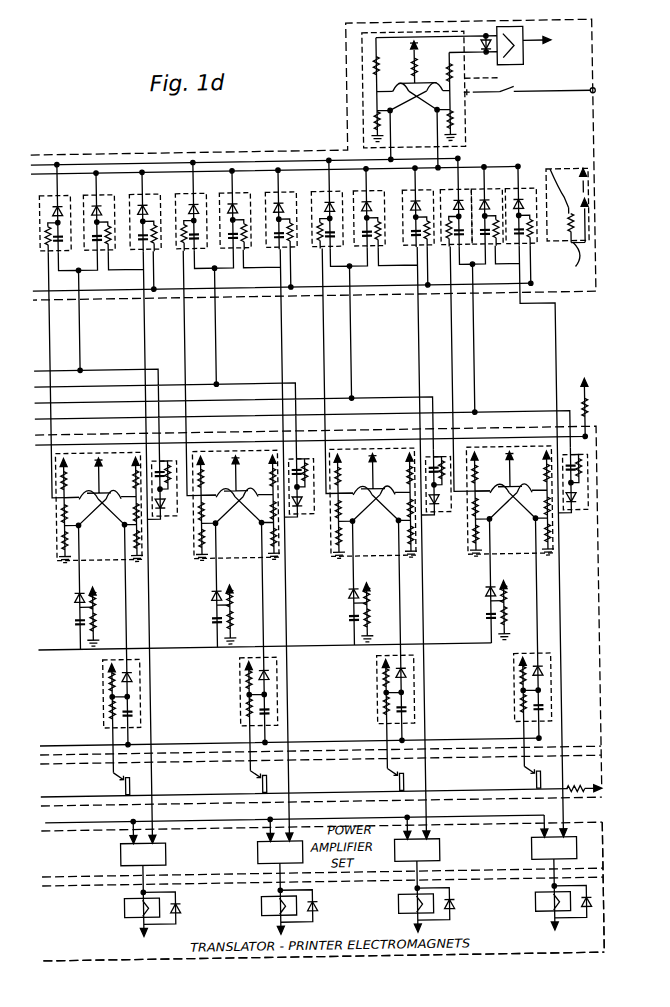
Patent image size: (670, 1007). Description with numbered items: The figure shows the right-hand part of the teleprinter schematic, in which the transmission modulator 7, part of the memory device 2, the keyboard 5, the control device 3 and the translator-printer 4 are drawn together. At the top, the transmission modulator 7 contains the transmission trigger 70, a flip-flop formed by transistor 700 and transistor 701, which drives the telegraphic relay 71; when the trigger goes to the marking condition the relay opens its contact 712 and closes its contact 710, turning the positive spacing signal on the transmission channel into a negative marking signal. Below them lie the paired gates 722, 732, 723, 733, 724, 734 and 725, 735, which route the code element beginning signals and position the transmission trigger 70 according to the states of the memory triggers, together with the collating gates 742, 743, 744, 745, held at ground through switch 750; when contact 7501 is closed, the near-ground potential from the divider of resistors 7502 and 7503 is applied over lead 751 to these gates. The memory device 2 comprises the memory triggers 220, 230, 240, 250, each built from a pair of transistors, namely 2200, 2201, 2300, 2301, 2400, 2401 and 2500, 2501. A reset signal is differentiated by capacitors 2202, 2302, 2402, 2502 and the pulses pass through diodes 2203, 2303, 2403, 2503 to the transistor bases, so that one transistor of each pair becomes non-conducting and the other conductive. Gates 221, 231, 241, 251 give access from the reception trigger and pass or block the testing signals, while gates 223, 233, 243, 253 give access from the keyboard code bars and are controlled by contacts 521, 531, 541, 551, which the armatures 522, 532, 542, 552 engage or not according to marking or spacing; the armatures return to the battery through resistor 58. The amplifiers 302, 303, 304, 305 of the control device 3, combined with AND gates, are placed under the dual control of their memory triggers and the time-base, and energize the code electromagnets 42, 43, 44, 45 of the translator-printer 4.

The transmission modulator 7 is at (172, 157).
The transmission trigger 70 is at (468, 148).
The telegraphic relay 71 is at (527, 66).
The transistor 700 is at (436, 80).
The transistor 701 is at (404, 80).
The contact 710 is at (494, 77).
The contact 712 is at (505, 104).
The gate 722 is at (61, 207).
The gate 732 is at (102, 211).
The collating gate 742 is at (148, 211).
The gate 723 is at (197, 205).
The gate 733 is at (238, 209).
The collating gate 743 is at (284, 209).
The gate 724 is at (333, 203).
The gate 734 is at (372, 207).
The collating gate 744 is at (421, 206).
The gate 725 is at (462, 201).
The gate 735 is at (490, 205).
The collating gate 745 is at (524, 205).
The switch 750 is at (576, 173).
The contact 7501 is at (559, 176).
The resistor 7502 is at (562, 232).
The resistor 7503 is at (565, 256).
The lead 751 is at (244, 282).
The memory device 2 is at (515, 435).
The memory trigger 220 is at (60, 561).
The transistor 2200 is at (80, 490).
The transistor 2201 is at (118, 494).
The gate 221 is at (159, 520).
The diode 2203 is at (70, 598).
The differentiating capacitor 2202 is at (70, 624).
The gate 223 is at (97, 663).
The memory trigger 230 is at (225, 512).
The transistor 2300 is at (220, 487).
The transistor 2301 is at (250, 486).
The gate 231 is at (298, 494).
The diode 2303 is at (202, 585).
The differentiating capacitor 2302 is at (205, 615).
The gate 233 is at (246, 646).
The memory trigger 240 is at (362, 510).
The transistor 2400 is at (357, 485).
The transistor 2401 is at (387, 484).
The gate 241 is at (435, 492).
The diode 2403 is at (339, 583).
The differentiating capacitor 2402 is at (342, 613).
The gate 243 is at (383, 644).
The memory trigger 250 is at (499, 508).
The transistor 2500 is at (494, 483).
The transistor 2501 is at (524, 482).
The gate 251 is at (572, 489).
The diode 2503 is at (475, 581).
The differentiating capacitor 2502 is at (479, 611).
The gate 253 is at (519, 642).
The contact 521 is at (126, 770).
The armature 522 is at (118, 789).
The contact 531 is at (263, 768).
The armature 532 is at (245, 784).
The contact 541 is at (400, 766).
The armature 542 is at (382, 782).
The contact 551 is at (537, 764).
The armature 552 is at (519, 780).
The resistor 58 is at (583, 777).
The manual transmission keyboard 5 is at (569, 806).
The control device of the translator-printer 3 is at (585, 808).
The amplifier 302 is at (143, 842).
The amplifier 303 is at (280, 840).
The amplifier 304 is at (417, 838).
The amplifier 305 is at (554, 837).
The code electromagnet 42 is at (115, 912).
The code electromagnet 43 is at (278, 899).
The code electromagnet 44 is at (415, 897).
The code electromagnet 45 is at (552, 894).
The translator-printer 4 is at (326, 968).